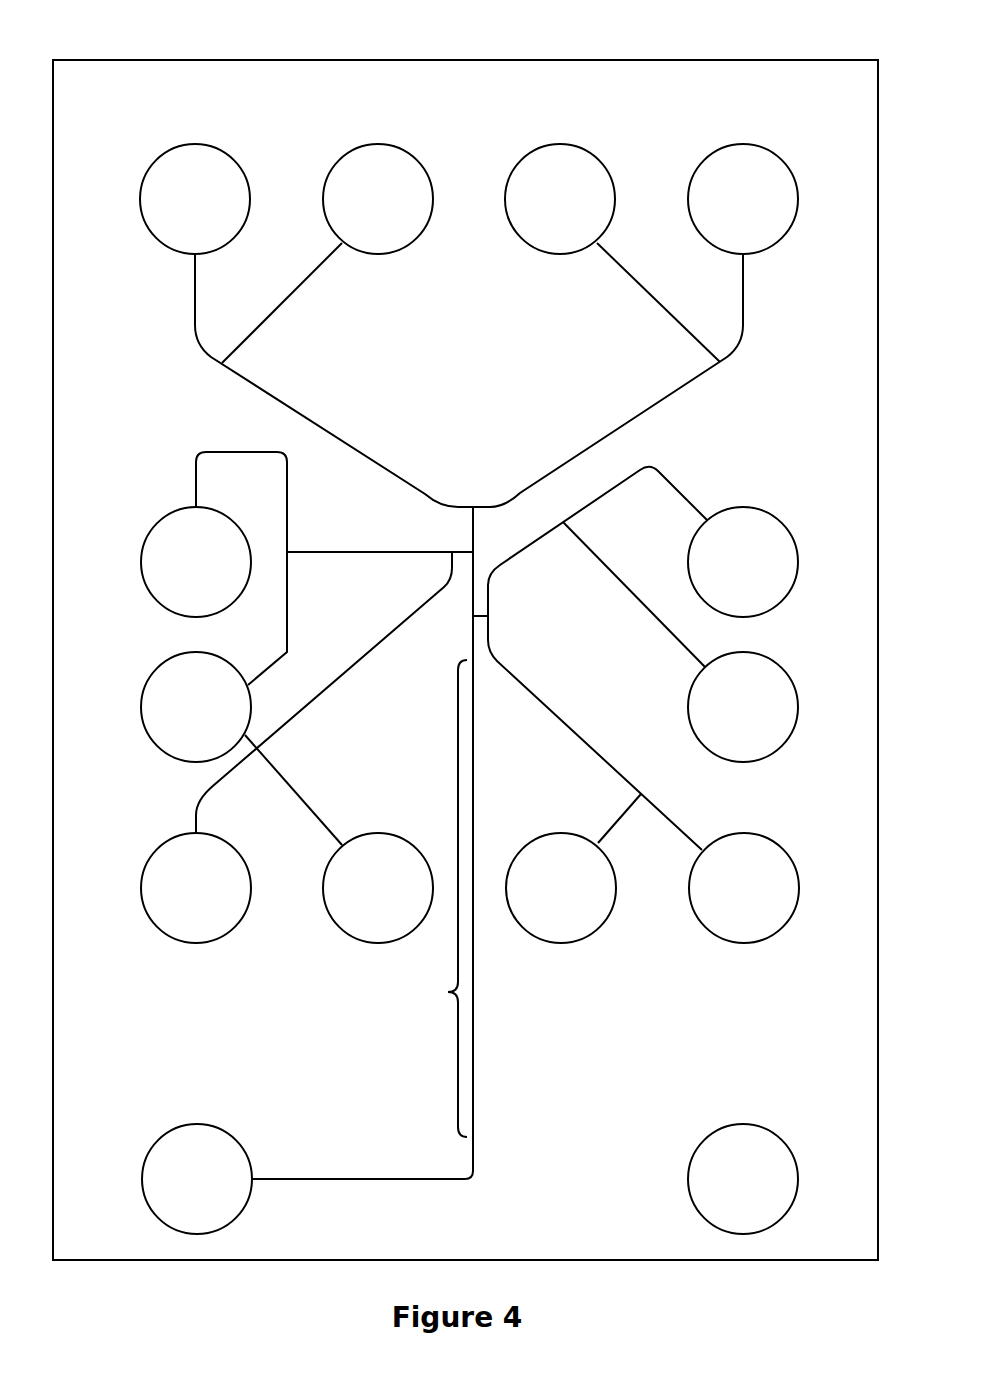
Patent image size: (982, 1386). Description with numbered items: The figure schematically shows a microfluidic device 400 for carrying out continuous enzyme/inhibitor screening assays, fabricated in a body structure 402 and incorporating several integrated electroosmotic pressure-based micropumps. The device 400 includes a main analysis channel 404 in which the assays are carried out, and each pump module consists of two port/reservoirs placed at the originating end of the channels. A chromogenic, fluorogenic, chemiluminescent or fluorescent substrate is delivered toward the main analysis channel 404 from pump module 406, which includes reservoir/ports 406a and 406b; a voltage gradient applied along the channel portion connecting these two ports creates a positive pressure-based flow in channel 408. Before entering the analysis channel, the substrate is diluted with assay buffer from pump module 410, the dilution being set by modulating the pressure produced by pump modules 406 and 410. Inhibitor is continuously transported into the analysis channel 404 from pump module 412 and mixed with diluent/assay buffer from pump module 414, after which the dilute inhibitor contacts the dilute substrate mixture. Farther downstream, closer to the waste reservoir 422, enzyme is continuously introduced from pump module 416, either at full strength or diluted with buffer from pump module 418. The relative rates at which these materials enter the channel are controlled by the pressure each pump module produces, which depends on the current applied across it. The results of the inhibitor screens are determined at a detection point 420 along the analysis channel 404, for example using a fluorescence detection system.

The device 400 is at (138, 37).
The body structure 402 is at (842, 100).
The main analysis channel 404 is at (424, 898).
The pump module 406 is at (140, 124).
The reservoir/port 406a is at (195, 199).
The reservoir/port 406b is at (378, 199).
The channel 408 is at (338, 422).
The pump module 410 is at (799, 124).
The pump module 412 is at (132, 507).
The pump module 414 is at (141, 952).
The pump module 416 is at (807, 508).
The pump module 418 is at (506, 952).
The detection point 420 is at (490, 1033).
The waste reservoir 422 is at (197, 1179).